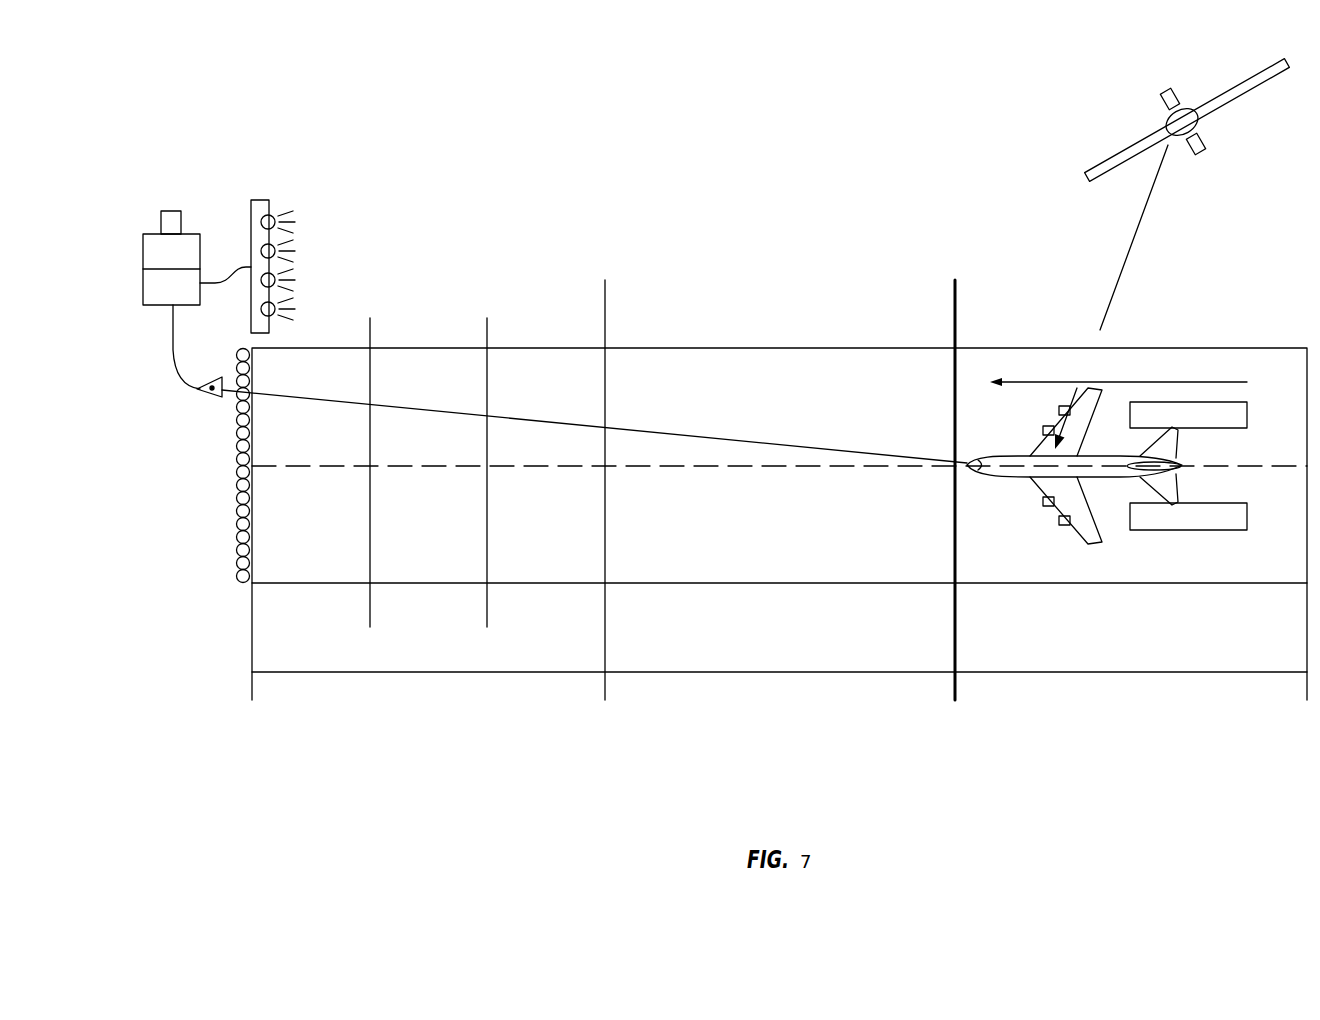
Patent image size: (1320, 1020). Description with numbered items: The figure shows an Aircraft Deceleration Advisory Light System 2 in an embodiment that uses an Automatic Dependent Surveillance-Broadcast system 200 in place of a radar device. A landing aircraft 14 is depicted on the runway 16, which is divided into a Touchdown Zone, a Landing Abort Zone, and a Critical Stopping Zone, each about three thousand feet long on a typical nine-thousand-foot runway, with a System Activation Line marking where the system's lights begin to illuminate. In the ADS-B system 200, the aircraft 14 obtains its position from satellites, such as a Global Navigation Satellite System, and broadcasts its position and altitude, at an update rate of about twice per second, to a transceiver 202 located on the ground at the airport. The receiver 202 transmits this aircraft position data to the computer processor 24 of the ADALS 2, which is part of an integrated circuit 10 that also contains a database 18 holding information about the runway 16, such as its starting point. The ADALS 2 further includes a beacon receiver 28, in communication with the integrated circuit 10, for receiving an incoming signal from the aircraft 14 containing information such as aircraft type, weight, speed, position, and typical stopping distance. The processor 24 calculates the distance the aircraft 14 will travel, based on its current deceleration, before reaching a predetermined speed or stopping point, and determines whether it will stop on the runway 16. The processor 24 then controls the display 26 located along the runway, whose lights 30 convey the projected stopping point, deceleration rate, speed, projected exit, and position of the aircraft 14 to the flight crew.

The Aircraft Deceleration Advisory Light System 2 is at (988, 199).
The integrated circuit 10 is at (141, 211).
The aircraft 14 is at (1023, 456).
The runway 16 is at (645, 349).
The database 18 is at (200, 247).
The computer processor 24 is at (185, 307).
The display 26 is at (277, 194).
The beacon receiver 28 is at (171, 211).
The lights 30 is at (278, 322).
The Automatic Dependent Surveillance-Broadcast system 200 is at (1071, 111).
The transceiver 202 is at (203, 396).